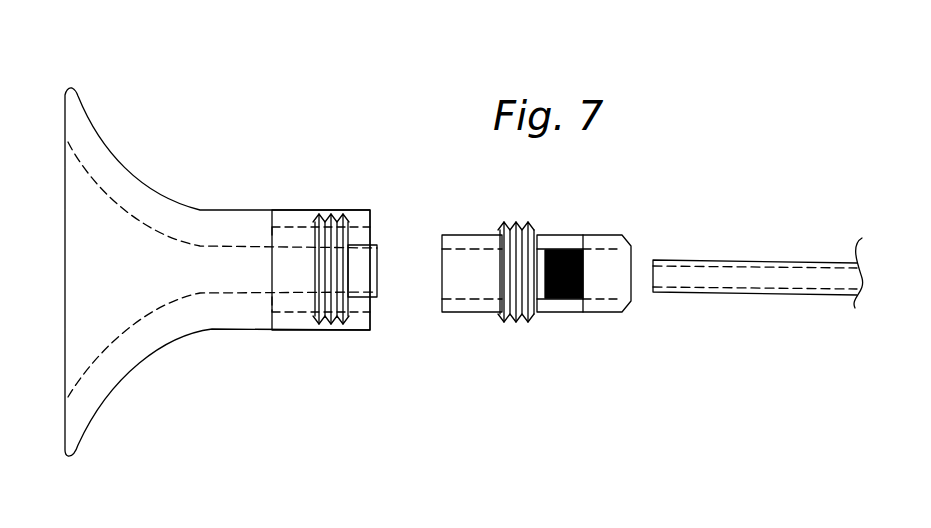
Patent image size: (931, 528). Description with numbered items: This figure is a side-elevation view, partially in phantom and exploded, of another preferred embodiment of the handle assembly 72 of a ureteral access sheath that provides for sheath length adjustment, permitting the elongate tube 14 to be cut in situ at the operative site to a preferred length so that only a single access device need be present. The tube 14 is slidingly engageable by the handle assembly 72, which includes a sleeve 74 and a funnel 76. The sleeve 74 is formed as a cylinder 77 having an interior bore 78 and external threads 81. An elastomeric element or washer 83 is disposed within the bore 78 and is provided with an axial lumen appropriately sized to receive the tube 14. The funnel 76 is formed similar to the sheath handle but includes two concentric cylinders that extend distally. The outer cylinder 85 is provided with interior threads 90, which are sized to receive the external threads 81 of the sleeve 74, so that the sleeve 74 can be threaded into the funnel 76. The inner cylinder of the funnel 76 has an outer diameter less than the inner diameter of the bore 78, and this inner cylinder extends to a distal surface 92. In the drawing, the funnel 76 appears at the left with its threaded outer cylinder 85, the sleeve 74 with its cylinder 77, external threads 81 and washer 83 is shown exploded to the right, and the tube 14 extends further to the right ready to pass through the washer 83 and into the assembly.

The handle assembly 72 is at (367, 95).
The funnel 76 is at (217, 158).
The outer cylinder 85 is at (368, 333).
The interior threads 90 is at (315, 277).
The distal surface 92 is at (376, 262).
The sleeve 74 is at (545, 208).
The cylinder 77 is at (470, 313).
The interior bore 78 is at (472, 252).
The external threads 81 is at (537, 320).
The elastomeric element or washer 83 is at (586, 262).
The tube 14 is at (707, 260).